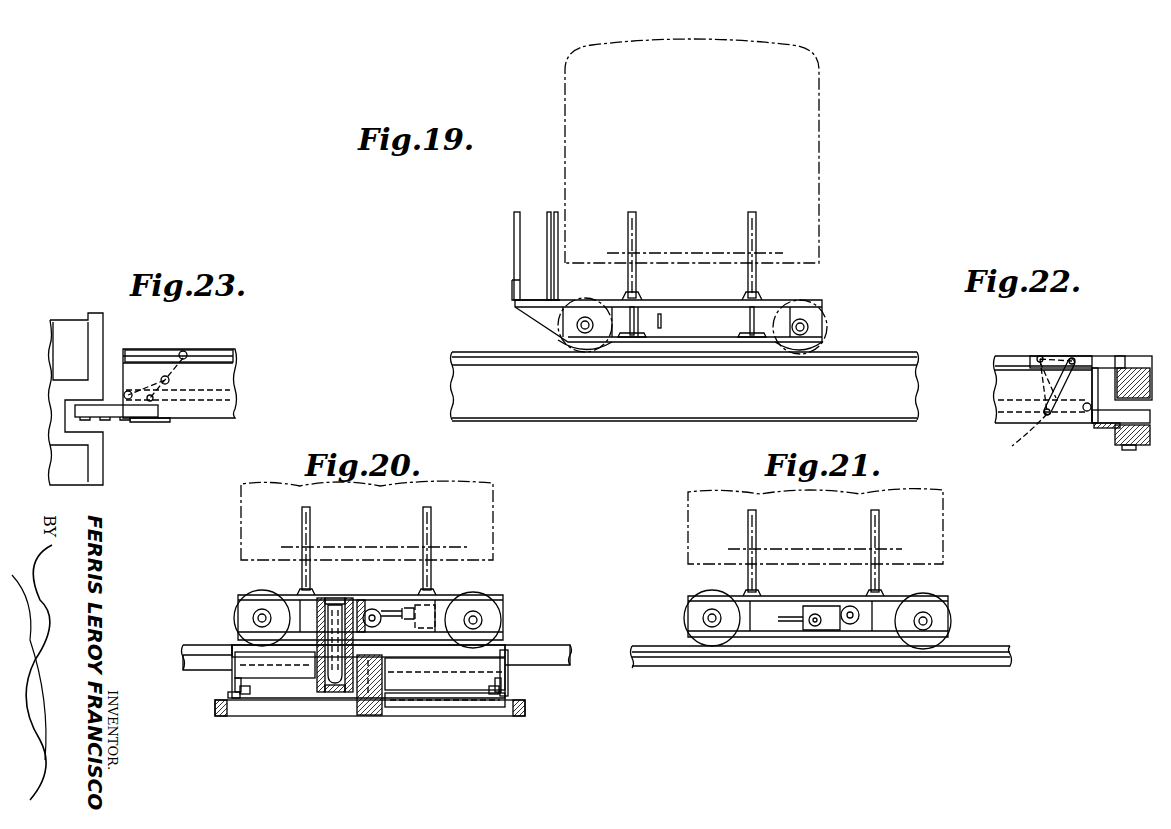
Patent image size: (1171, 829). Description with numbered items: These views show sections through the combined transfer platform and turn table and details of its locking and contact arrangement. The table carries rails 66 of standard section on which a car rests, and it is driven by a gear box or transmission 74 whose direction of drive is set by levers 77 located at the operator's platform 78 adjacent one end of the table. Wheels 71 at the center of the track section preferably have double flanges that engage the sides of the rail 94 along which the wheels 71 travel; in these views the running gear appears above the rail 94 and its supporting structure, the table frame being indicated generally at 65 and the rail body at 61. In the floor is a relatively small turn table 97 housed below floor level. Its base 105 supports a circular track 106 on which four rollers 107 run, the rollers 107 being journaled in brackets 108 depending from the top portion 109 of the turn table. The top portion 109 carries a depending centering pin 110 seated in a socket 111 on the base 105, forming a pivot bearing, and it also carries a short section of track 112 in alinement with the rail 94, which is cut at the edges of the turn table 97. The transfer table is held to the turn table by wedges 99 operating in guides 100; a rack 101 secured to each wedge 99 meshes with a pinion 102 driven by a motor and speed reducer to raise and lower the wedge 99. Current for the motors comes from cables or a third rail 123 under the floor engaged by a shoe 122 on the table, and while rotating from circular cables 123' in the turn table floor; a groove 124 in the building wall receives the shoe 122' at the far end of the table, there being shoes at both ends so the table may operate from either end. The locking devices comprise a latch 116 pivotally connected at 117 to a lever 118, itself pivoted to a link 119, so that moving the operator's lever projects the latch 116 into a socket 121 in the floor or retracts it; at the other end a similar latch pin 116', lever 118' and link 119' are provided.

In FIG. 19, the rail 61 is at (555, 368).
In FIG. 20, the rail 61 is at (556, 660).
In FIG. 21, the rail 61 is at (682, 660).
In FIG. 19, the carriage frame 65 is at (837, 292).
In FIG. 20, the carriage frame 65 is at (501, 587).
In FIG. 21, the carriage frame 65 is at (958, 590).
In FIG. 19, the rails 66 is at (626, 293).
In FIG. 20, the rails 66 is at (299, 588).
In FIG. 21, the rails 66 is at (745, 589).
In FIG. 22, the rails 66 is at (1005, 356).
In FIG. 23, the rails 66 is at (232, 350).
In FIG. 20, the wheels 71 is at (236, 612).
In FIG. 21, the wheels 71 is at (686, 610).
In FIG. 21, the gear box or transmission 74 is at (829, 628).
In FIG. 19, the levers 77 is at (550, 216).
In FIG. 19, the operator's platform 78 is at (541, 283).
In FIG. 19, the rail 94 is at (477, 352).
In FIG. 20, the rail 94 is at (192, 645).
In FIG. 21, the rail 94 is at (651, 646).
In FIG. 20, the turn table 97 is at (509, 646).
In FIG. 20, the wedges 99 is at (335, 674).
In FIG. 20, the guides 100 is at (333, 600).
In FIG. 20, the rack 101 is at (314, 662).
In FIG. 20, the pinion 102 is at (378, 606).
In FIG. 20, the base 105 is at (224, 717).
In FIG. 20, the circular track 106 is at (228, 696).
In FIG. 20, the rollers 107 is at (234, 684).
In FIG. 20, the brackets 108 is at (250, 689).
In FIG. 20, the top portion 109 is at (505, 672).
In FIG. 20, the centering pin 110 is at (390, 668).
In FIG. 20, the socket 111 is at (372, 700).
In FIG. 20, the short section of track 112 is at (505, 651).
In FIG. 22, the bolt or latch 116 is at (1085, 339).
In FIG. 22, the pivotal connection 117 is at (1066, 357).
In FIG. 22, the lever 118 is at (1069, 372).
In FIG. 22, the link 119 is at (1028, 413).
In FIG. 22, the socket 121 is at (1118, 356).
In FIG. 22, the shoe 122 is at (1114, 418).
In FIG. 22, the cables or third rail 123 is at (1131, 453).
In FIG. 20, the circular third rail or cables 123' is at (445, 719).
In FIG. 23, the latch pin 116' is at (179, 340).
In FIG. 23, the lever 118' is at (205, 338).
In FIG. 23, the link 119' is at (178, 398).
In FIG. 23, the bracket bar 122' is at (133, 426).
In FIG. 23, the groove 124 is at (95, 425).